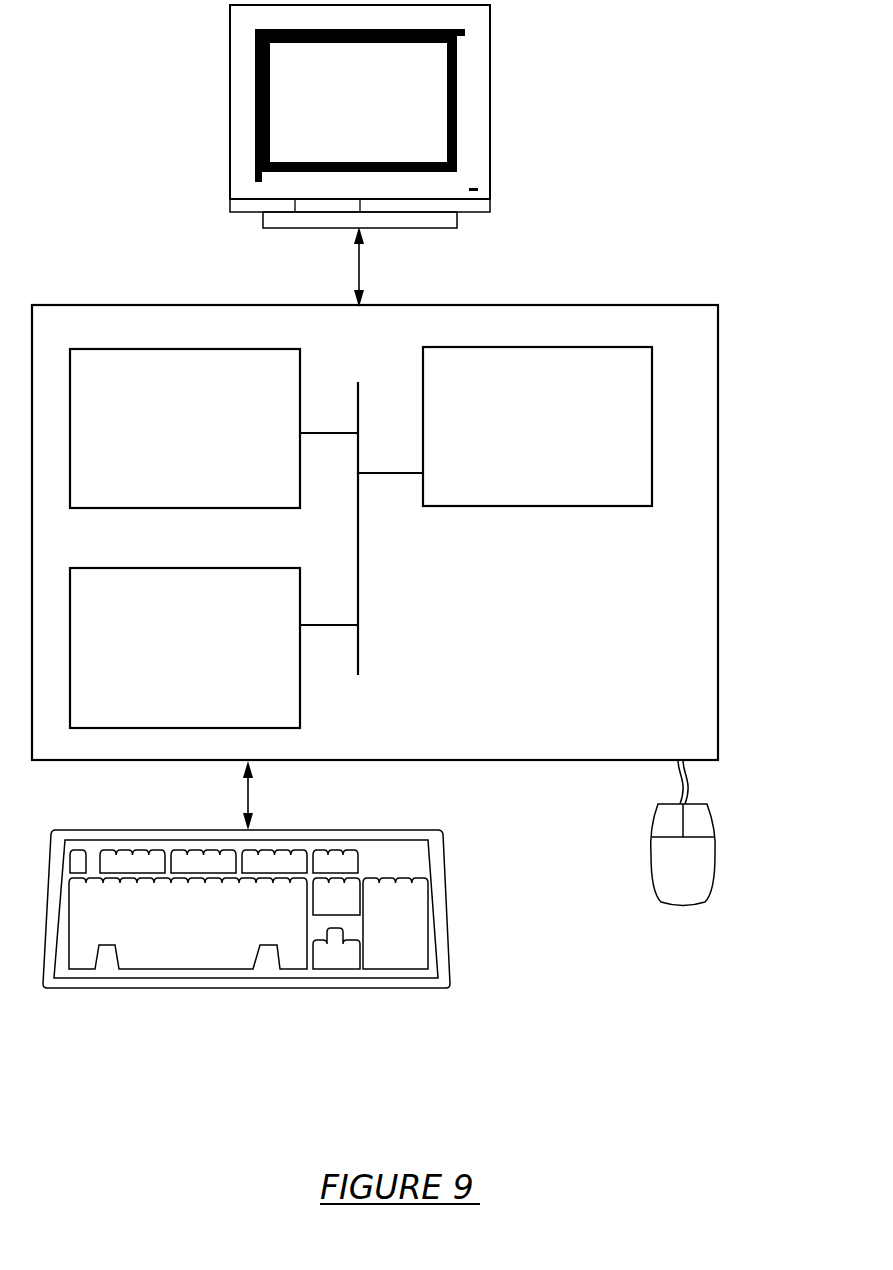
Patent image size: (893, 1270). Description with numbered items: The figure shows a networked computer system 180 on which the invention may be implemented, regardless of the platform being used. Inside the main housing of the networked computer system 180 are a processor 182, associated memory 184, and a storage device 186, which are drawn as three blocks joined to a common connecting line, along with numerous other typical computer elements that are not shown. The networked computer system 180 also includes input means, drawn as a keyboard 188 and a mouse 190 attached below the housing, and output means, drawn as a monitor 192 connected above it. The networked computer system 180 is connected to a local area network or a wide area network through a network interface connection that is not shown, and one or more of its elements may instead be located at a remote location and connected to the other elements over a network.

The networked computer system 180 is at (738, 158).
The processor 182 is at (534, 437).
The memory 184 is at (164, 439).
The storage device 186 is at (162, 661).
The keyboard 188 is at (157, 946).
The mouse 190 is at (662, 879).
The monitor 192 is at (337, 121).